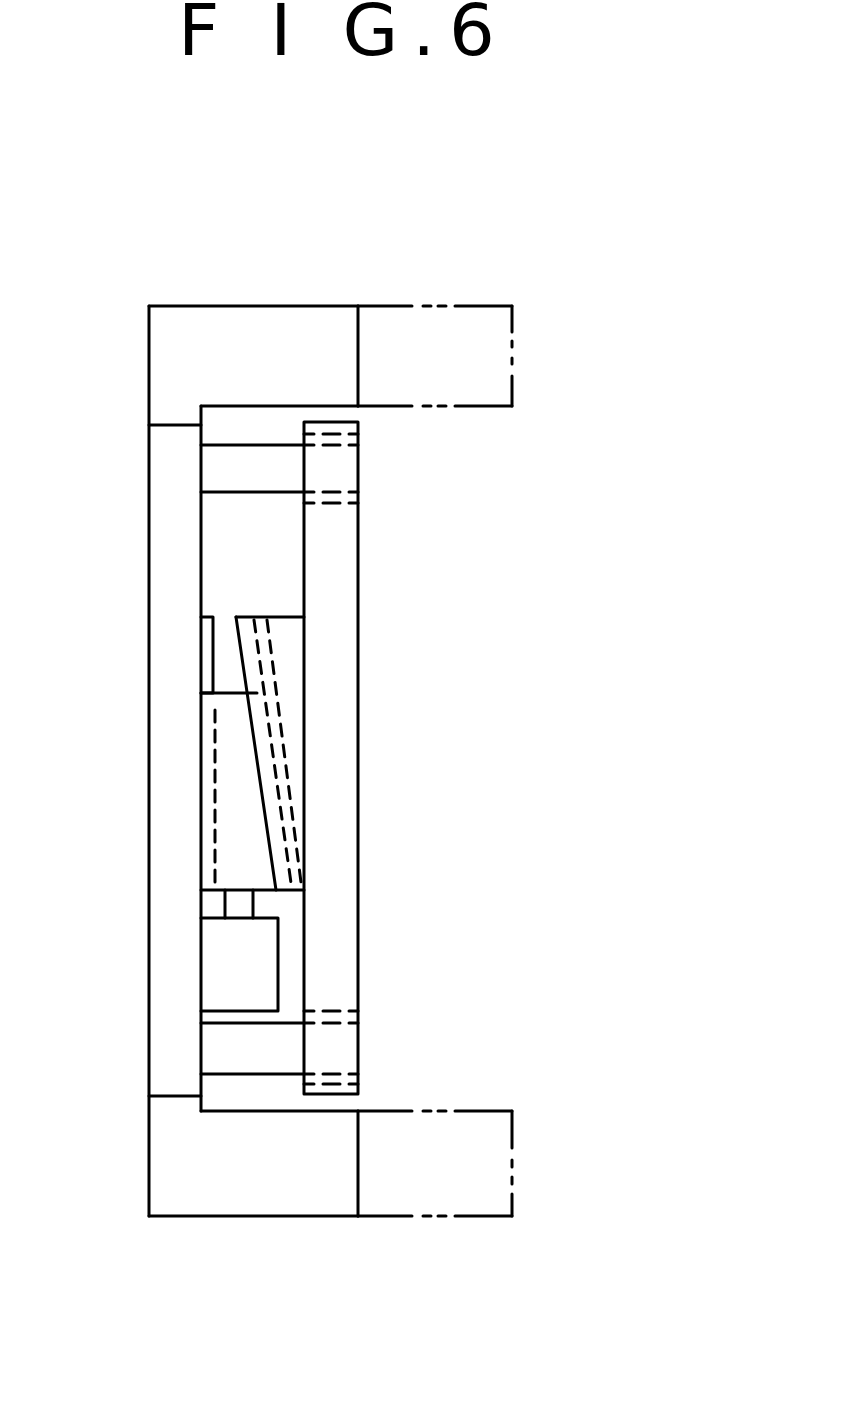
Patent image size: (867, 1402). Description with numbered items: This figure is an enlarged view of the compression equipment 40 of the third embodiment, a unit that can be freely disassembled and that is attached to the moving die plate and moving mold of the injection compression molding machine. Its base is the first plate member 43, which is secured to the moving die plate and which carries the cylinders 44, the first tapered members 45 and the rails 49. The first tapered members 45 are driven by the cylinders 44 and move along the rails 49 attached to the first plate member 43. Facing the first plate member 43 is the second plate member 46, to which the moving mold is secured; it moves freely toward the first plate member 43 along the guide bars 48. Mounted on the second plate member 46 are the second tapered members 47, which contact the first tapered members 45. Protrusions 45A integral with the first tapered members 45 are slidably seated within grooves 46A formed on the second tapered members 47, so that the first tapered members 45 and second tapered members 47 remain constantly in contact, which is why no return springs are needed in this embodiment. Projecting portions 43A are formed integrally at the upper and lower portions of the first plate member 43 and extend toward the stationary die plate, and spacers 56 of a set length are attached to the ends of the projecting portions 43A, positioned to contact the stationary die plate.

The compression equipment 40 is at (329, 254).
The first plate member 43 is at (160, 780).
The projecting portions 43A is at (249, 323).
The cylinders 44 is at (213, 960).
The first tapered members 45 is at (223, 843).
The protrusions 45A is at (312, 685).
The second plate member 46 is at (342, 797).
The grooves 46A is at (312, 628).
The second tapered members 47 is at (303, 648).
The guide bars 48 is at (212, 467).
The rails 49 is at (205, 652).
The spacers 56 is at (492, 306).